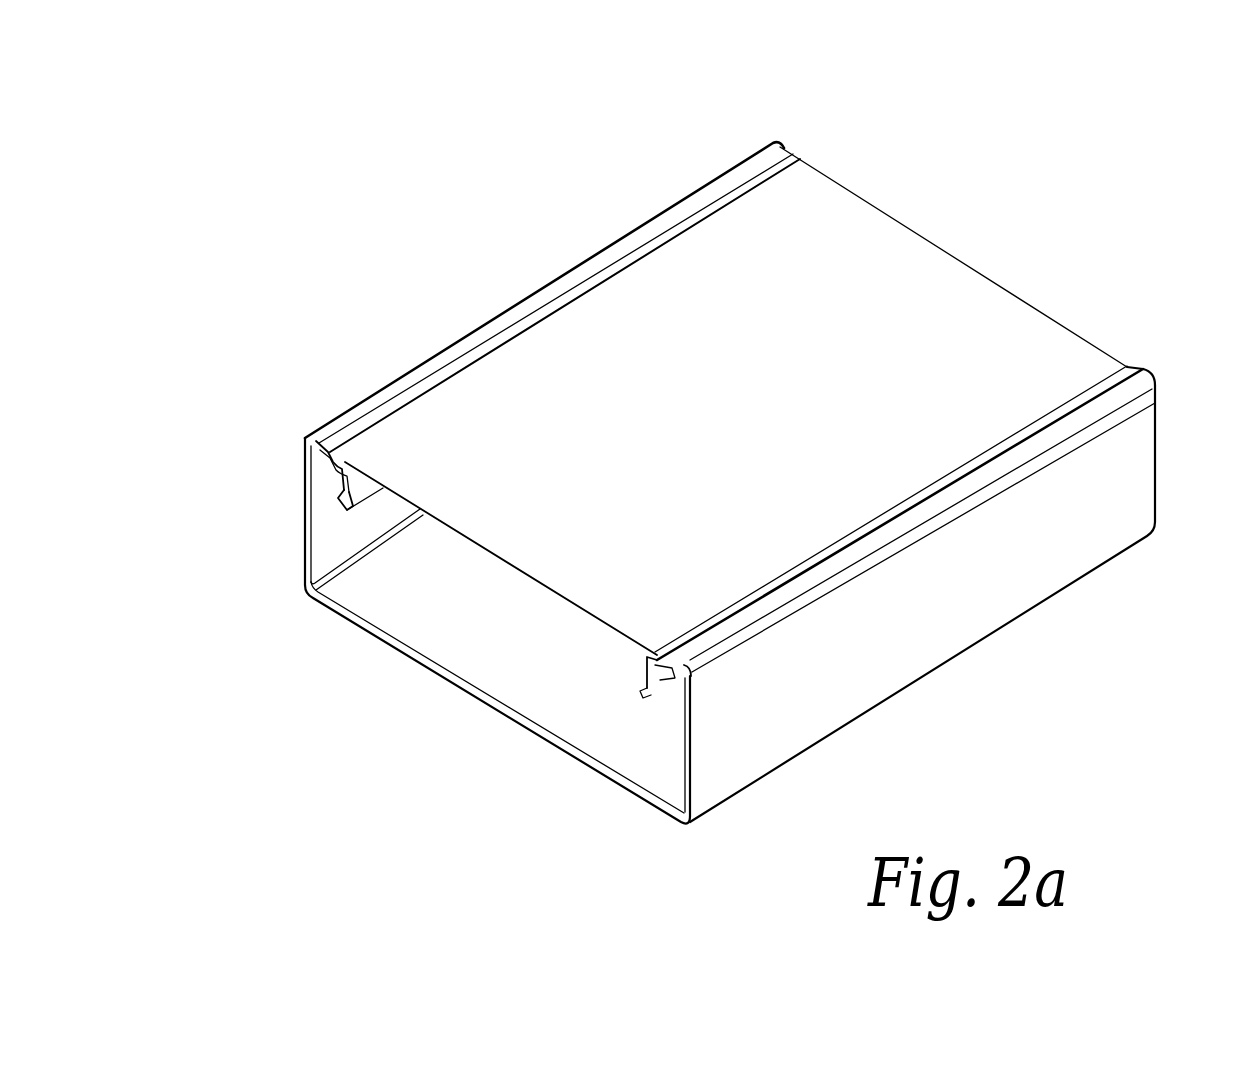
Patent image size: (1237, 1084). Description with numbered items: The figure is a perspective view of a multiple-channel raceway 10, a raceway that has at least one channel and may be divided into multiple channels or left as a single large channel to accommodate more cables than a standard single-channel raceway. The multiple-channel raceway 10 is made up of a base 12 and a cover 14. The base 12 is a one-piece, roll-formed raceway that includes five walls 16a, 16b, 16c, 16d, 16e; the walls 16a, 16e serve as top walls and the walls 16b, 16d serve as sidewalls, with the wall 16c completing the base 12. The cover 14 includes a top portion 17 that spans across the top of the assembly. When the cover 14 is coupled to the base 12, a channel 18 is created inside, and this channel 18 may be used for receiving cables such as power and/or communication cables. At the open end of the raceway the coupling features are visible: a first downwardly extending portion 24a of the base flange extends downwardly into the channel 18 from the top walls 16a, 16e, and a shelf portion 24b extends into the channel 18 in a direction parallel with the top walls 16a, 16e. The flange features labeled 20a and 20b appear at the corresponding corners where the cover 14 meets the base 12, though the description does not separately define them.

The multiple-channel raceway 10 is at (467, 210).
The base 12 is at (463, 688).
The cover 14 is at (960, 266).
The top wall 16a is at (1138, 373).
The sidewall 16b is at (1075, 570).
The wall 16c is at (410, 642).
The sidewall 16d is at (310, 550).
The top wall 16e is at (463, 362).
The top portion 17 is at (819, 228).
The channel 18 is at (547, 705).
The right clip 20a is at (652, 662).
The left clip 20b is at (326, 468).
The first downwardly extending portion 24a is at (647, 710).
The shelf portion 24b is at (327, 500).